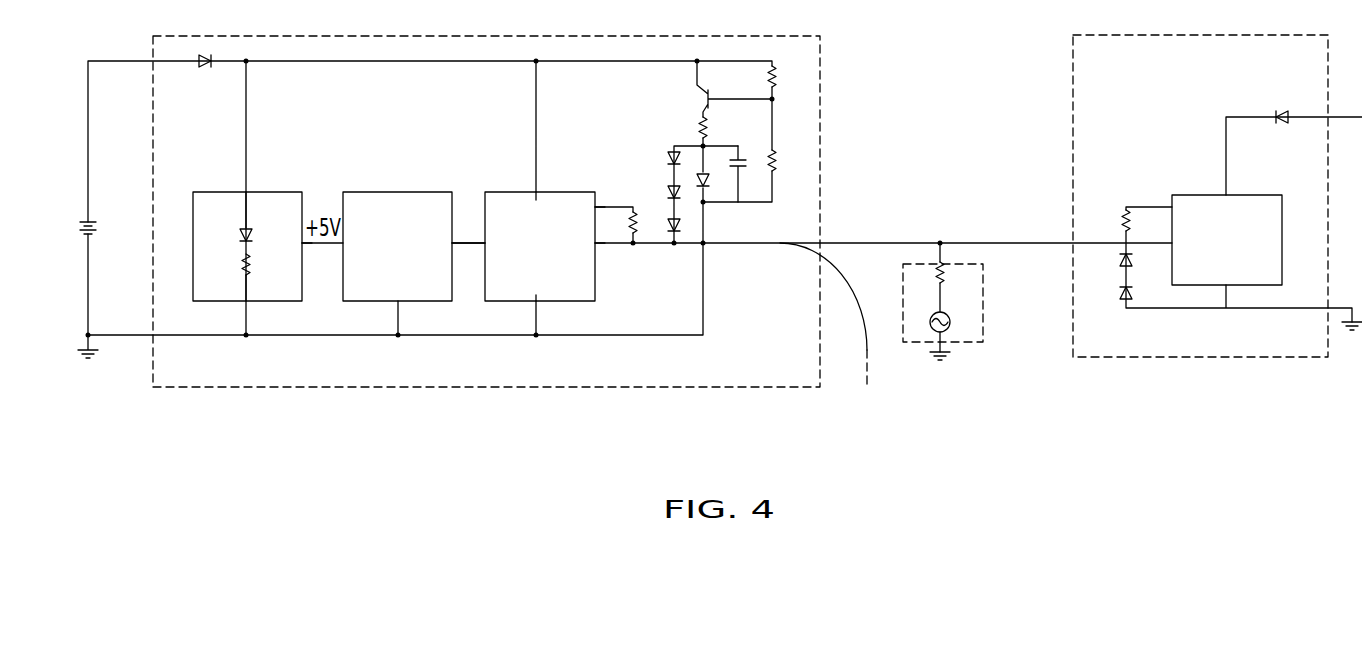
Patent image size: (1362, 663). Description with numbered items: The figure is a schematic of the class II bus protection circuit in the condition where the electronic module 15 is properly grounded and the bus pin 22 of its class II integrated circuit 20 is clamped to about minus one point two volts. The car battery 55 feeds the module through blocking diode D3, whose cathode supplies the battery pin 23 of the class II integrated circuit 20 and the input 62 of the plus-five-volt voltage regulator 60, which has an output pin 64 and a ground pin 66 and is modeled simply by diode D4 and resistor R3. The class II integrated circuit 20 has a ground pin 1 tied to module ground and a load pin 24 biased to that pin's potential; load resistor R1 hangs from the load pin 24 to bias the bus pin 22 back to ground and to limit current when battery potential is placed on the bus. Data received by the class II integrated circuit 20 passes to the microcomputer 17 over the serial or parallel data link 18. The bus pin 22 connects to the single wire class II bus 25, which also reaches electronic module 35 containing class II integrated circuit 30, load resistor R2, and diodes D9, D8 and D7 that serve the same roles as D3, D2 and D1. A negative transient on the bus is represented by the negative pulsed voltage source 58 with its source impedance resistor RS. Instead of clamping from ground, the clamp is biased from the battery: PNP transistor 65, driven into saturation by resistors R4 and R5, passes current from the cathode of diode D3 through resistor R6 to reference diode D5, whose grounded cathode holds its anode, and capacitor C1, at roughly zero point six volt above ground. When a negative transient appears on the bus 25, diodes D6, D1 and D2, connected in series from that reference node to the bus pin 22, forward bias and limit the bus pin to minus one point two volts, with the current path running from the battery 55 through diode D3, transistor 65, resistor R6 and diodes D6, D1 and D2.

The electronic module 15 is at (413, 412).
The car battery 55 is at (110, 214).
The blocking diode D3 is at (208, 68).
The voltage regulator 60 is at (282, 190).
The regulator input 62 is at (274, 218).
The plus-five-volt output pin 64 is at (297, 256).
The regulator ground pin 66 is at (274, 293).
The regulator model diode D4 is at (240, 234).
The regulator model resistor R3 is at (240, 261).
The microcomputer 17 is at (401, 190).
The data link 18 is at (480, 240).
The class II integrated circuit 20 is at (567, 190).
The battery pin 23 is at (554, 223).
The load pin 24 is at (589, 223).
The bus pin 22 is at (589, 258).
The ground pin 1 is at (548, 293).
The load resistor R1 is at (628, 222).
The PNP bipolar junction transistor 65 is at (690, 98).
The bias resistor R6 is at (700, 127).
The clamp diode D6 is at (672, 160).
The series protection diode D1 is at (682, 192).
The series protection diode D2 is at (682, 228).
The reference diode D5 is at (712, 178).
The capacitor C1 is at (745, 163).
The transistor bias resistor R4 is at (778, 72).
The transistor bias resistor R5 is at (778, 158).
The class II bus 25 is at (899, 232).
The source impedance resistor RS is at (946, 278).
The negative pulsed voltage source 58 is at (985, 318).
The electronic module 35 is at (1245, 388).
The class II integrated circuit 30 is at (1202, 193).
The blocking diode D9 is at (1283, 112).
The load resistor R2 is at (1120, 222).
The protection diode D8 is at (1120, 262).
The protection diode D7 is at (1120, 297).